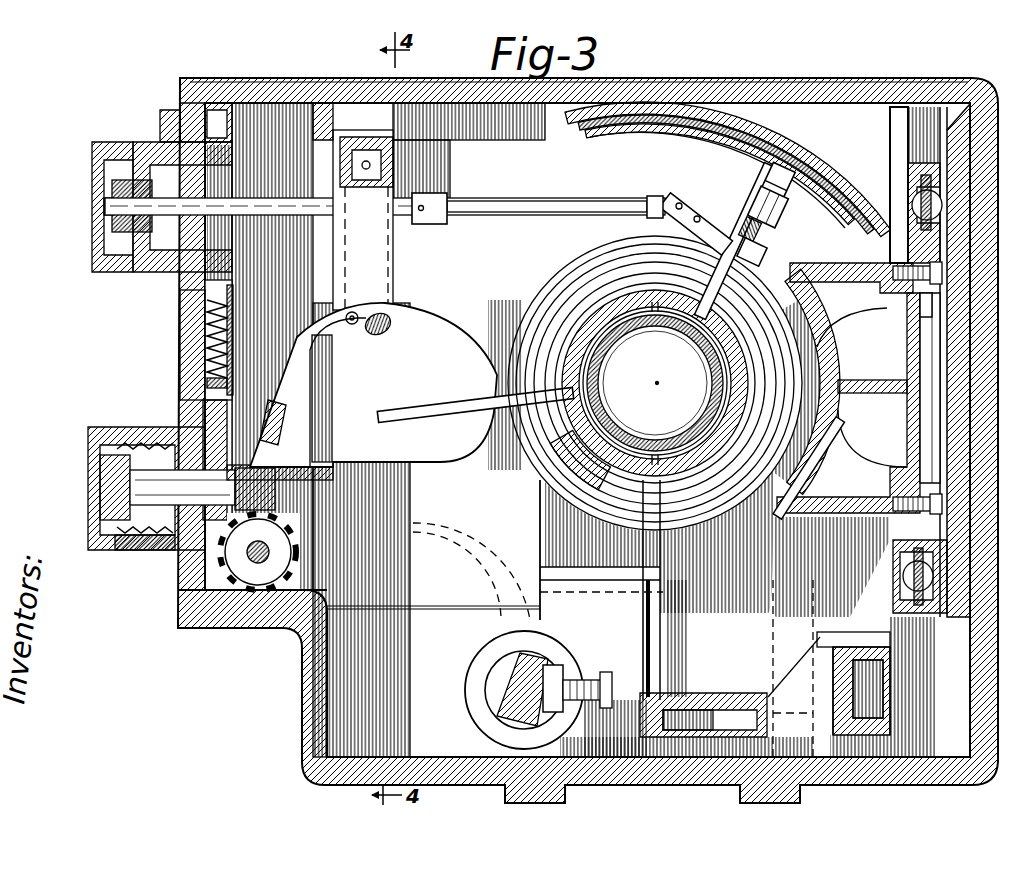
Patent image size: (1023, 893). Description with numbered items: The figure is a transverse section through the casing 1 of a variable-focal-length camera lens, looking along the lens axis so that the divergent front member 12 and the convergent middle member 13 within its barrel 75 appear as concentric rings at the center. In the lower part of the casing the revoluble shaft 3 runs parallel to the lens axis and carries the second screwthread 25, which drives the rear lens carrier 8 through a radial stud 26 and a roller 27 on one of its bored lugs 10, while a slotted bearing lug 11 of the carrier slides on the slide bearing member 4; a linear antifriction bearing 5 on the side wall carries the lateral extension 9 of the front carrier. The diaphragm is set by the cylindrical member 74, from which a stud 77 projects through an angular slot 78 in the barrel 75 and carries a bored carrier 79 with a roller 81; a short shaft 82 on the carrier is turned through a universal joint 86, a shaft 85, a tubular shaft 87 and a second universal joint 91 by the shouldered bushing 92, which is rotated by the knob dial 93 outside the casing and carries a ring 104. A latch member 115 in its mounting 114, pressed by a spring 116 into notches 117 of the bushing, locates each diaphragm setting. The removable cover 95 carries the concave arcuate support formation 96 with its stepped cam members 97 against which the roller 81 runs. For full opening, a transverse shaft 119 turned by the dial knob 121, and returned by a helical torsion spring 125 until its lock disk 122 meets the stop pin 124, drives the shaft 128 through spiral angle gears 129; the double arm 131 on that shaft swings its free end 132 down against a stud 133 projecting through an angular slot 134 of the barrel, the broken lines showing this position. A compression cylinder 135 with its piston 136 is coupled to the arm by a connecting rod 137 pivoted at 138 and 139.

The casing 1 is at (262, 622).
The revoluble shaft 3 is at (555, 680).
The slide bearing member 4 is at (863, 648).
The linear antifriction bearing 5 is at (950, 250).
The rear lens carrier 8 is at (550, 538).
The lateral extension 9 is at (853, 283).
The bored lugs 10 is at (478, 670).
The slotted bearing lug 11 is at (887, 642).
The divergent front member 12 is at (666, 346).
The convergent middle member 13 is at (582, 290).
The second screwthread 25 is at (540, 640).
The radial stud 26 is at (601, 662).
The roller 27 is at (578, 668).
The cylindrical member 74 is at (585, 338).
The barrel 75 is at (560, 305).
The stud 77 is at (763, 247).
The angular slot 78 is at (623, 277).
The bored carrier 79 is at (752, 197).
The roller 81 is at (765, 178).
The short shaft 82 is at (765, 262).
The shaft 85 is at (562, 206).
The universal joint 86 is at (668, 200).
The tubular shaft 87 is at (316, 212).
The universal joint 91 is at (155, 222).
The shouldered bushing 92 is at (175, 150).
The knob dial 93 is at (92, 203).
The removable cover 95 is at (893, 92).
The concave arcuate support formation 96 is at (797, 118).
The cam members 97 is at (662, 130).
The ring 104 is at (214, 125).
The mounting 114 is at (232, 300).
The latch member 115 is at (212, 318).
The spring 116 is at (207, 351).
The notches 117 is at (222, 128).
The transverse shaft 119 is at (120, 483).
The dial knob 121 is at (107, 427).
The lock disk 122 is at (197, 408).
The stop pin 124 is at (170, 563).
The helical torsion spring 125 is at (137, 552).
The shaft 128 is at (262, 588).
The spiral angle gears 129 is at (237, 487).
The double arm 131 is at (293, 369).
The free end 132 is at (390, 327).
The stud 133 is at (433, 417).
The angular slot 134 is at (563, 453).
The compression cylinder 135 is at (357, 140).
The piston 136 is at (330, 150).
The connecting rod 137 is at (425, 190).
The pivotal connection 138 is at (380, 168).
The pivotal connection 139 is at (362, 312).